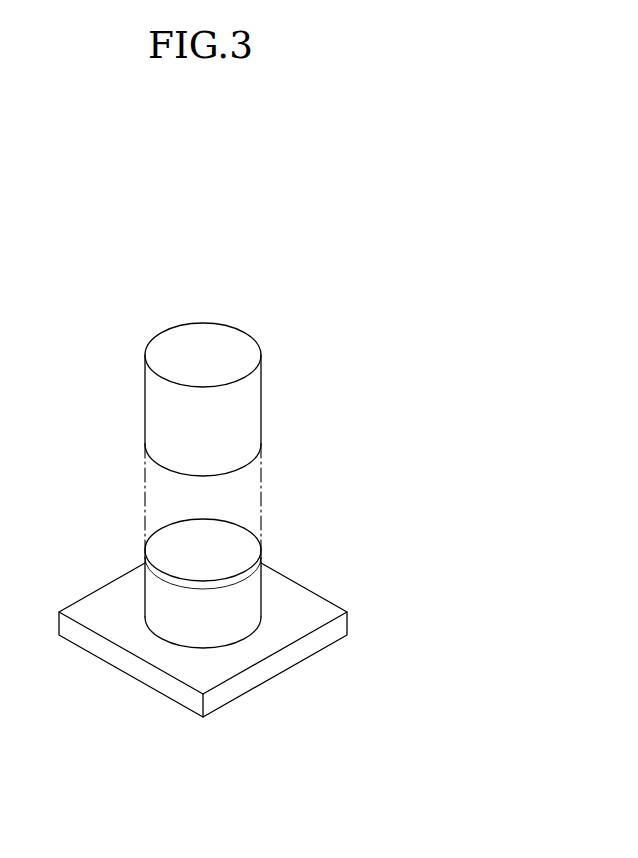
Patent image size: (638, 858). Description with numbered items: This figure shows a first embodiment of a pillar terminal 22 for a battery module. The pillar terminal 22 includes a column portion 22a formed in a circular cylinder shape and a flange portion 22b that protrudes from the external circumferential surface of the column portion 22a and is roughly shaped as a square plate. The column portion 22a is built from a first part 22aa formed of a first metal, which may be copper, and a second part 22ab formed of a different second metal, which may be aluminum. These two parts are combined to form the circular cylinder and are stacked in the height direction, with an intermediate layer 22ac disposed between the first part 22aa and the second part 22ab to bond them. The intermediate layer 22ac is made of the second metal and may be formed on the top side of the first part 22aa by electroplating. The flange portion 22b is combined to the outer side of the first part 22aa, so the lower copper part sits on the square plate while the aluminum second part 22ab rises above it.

The first pillar terminal 22 is at (257, 500).
The column portion 22a is at (407, 408).
The first part 22aa is at (245, 600).
The second part 22ab is at (247, 420).
The intermediate layer 22ac is at (232, 542).
The flange portion 22b is at (304, 607).